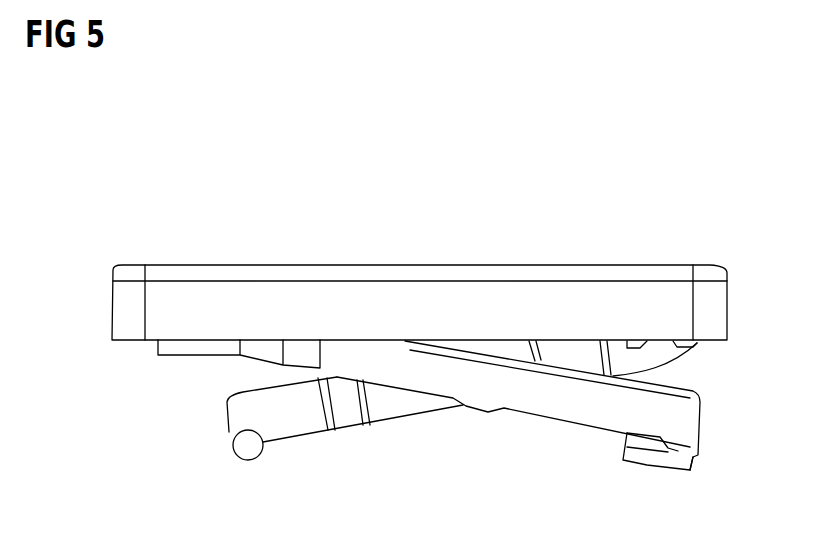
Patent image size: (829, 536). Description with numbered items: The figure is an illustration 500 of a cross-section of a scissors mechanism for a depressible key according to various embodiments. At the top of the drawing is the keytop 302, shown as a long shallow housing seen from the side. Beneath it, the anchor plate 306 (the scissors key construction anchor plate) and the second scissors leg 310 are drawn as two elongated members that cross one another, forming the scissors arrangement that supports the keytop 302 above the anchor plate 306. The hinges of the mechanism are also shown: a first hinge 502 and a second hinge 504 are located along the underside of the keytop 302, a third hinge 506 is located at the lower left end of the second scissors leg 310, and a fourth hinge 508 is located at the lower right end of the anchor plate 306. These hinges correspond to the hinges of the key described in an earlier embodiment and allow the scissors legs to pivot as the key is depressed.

The illustration 500 is at (728, 97).
The keytop 302 is at (470, 305).
The first hinge 502 is at (220, 323).
The second hinge 504 is at (703, 340).
The anchor plate 306 is at (602, 403).
The fourth hinge 508 is at (678, 452).
The second scissors leg 310 is at (415, 408).
The third hinge 506 is at (250, 445).